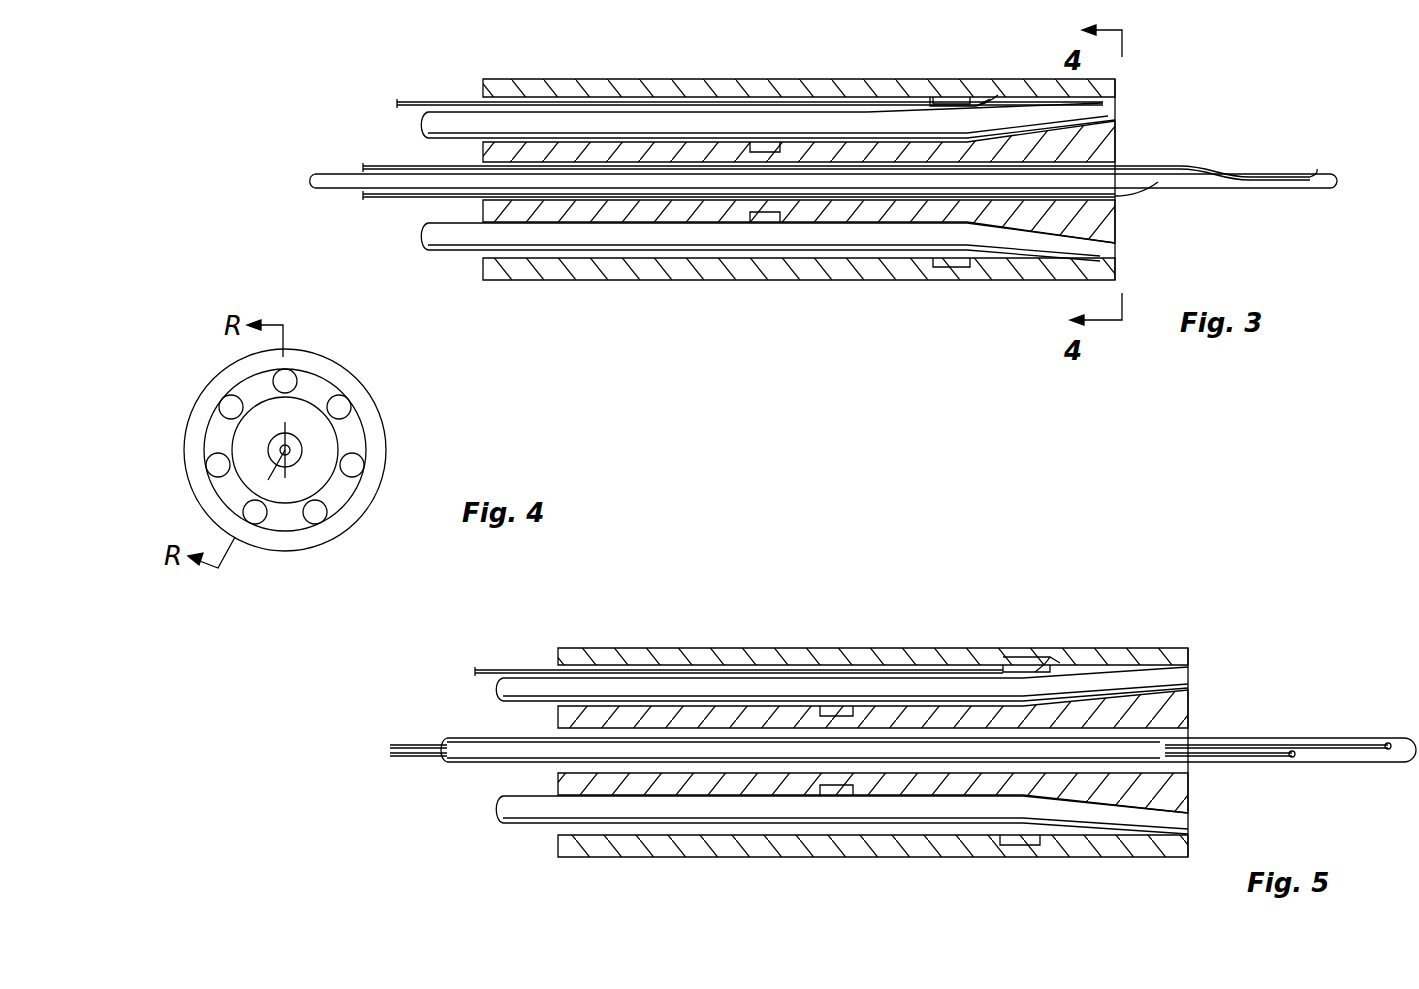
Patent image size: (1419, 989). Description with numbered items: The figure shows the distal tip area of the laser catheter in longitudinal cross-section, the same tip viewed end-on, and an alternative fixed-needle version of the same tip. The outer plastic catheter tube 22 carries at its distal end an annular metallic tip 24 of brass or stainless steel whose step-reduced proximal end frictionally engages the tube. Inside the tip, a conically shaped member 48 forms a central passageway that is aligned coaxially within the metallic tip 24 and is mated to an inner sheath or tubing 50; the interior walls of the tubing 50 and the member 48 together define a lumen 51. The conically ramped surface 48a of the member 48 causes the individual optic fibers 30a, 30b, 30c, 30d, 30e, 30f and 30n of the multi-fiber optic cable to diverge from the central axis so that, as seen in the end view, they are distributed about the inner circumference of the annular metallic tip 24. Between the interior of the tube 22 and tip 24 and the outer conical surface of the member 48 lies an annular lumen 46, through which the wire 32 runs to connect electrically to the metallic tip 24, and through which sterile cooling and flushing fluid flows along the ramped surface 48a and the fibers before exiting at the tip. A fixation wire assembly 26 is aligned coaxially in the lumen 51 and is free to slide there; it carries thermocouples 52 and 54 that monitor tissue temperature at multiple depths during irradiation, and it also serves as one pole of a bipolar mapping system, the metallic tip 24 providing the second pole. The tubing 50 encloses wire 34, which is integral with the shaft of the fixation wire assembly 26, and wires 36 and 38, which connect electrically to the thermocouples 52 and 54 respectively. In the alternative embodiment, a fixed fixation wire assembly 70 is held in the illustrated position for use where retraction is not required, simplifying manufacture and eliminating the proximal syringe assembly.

In FIG. 3, the plastic catheter tube 22 is at (770, 78).
In FIG. 5, the plastic catheter tube 22 is at (850, 648).
In FIG. 3, the annular metallic tip 24 is at (1047, 90).
In FIG. 4, the annular metallic tip 24 is at (217, 377).
In FIG. 5, the annular metallic tip 24 is at (1132, 648).
In FIG. 3, the fixation wire assembly 26 is at (1255, 148).
In FIG. 4, the fixation wire assembly 26 is at (308, 438).
In FIG. 3, the optic fiber 30a is at (1098, 108).
In FIG. 4, the optic fiber 30a is at (300, 375).
In FIG. 4, the optic fiber 30b is at (228, 405).
In FIG. 4, the optic fiber 30c is at (215, 467).
In FIG. 3, the optic fiber 30d is at (1047, 240).
In FIG. 4, the optic fiber 30d is at (253, 517).
In FIG. 5, the optic fiber 30d is at (1118, 808).
In FIG. 4, the optic fiber 30e is at (312, 513).
In FIG. 4, the optic fiber 30f is at (350, 463).
In FIG. 4, the optic fiber 30n is at (330, 395).
In FIG. 3, the wire 32 is at (448, 103).
In FIG. 5, the wire 32 is at (523, 672).
In FIG. 3, the wire 34 is at (330, 174).
In FIG. 4, the wire 34 is at (268, 447).
In FIG. 5, the wire 34 is at (483, 745).
In FIG. 3, the wire 36 is at (390, 166).
In FIG. 5, the wire 36 is at (413, 745).
In FIG. 3, the wire 38 is at (380, 197).
In FIG. 5, the wire 38 is at (412, 757).
In FIG. 3, the annular lumen 46 is at (895, 105).
In FIG. 4, the annular lumen 46 is at (262, 382).
In FIG. 5, the annular lumen 46 is at (760, 668).
In FIG. 3, the conically shaped member 48 is at (1090, 238).
In FIG. 4, the conically shaped member 48 is at (320, 468).
In FIG. 4, the conically ramped surface 48a is at (220, 497).
In FIG. 5, the conically ramped surface 48a is at (1157, 807).
In FIG. 3, the inner sheath or tubing 50 is at (698, 150).
In FIG. 5, the inner sheath or tubing 50 is at (740, 718).
In FIG. 3, the lumen 51 is at (848, 160).
In FIG. 4, the lumen 51 is at (300, 452).
In FIG. 5, the lumen 51 is at (913, 725).
In FIG. 3, the thermocouple 52 is at (1311, 178).
In FIG. 5, the thermocouple 52 is at (1395, 762).
In FIG. 5, the thermocouple 54 is at (1293, 757).
In FIG. 5, the fixed fixation wire assembly 70 is at (1308, 708).